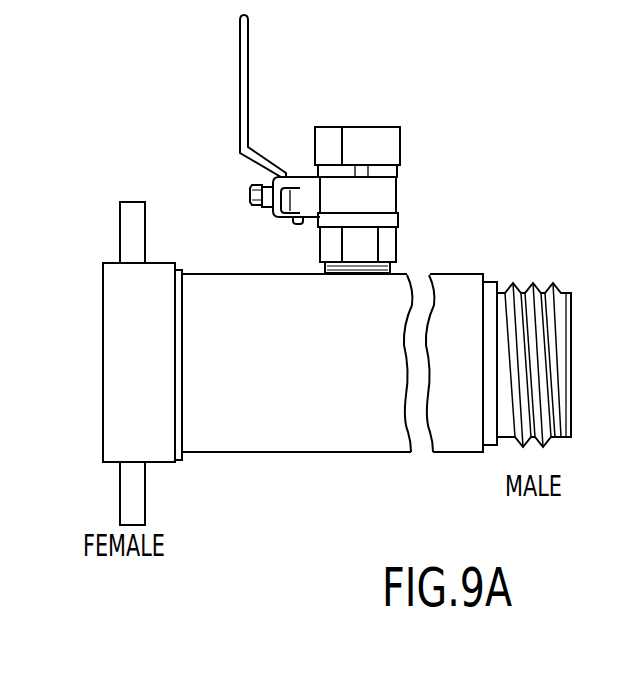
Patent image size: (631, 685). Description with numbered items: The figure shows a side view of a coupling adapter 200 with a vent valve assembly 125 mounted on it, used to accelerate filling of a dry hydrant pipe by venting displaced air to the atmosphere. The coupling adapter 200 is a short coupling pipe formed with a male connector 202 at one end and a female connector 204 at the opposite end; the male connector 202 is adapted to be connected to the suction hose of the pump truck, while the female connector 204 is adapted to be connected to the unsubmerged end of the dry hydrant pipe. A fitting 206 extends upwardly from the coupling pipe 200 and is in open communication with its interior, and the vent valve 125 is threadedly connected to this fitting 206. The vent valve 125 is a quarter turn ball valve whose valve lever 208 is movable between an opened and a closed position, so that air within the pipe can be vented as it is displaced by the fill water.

The coupling adapter 200 is at (287, 478).
The male connector 202 is at (532, 265).
The female connector 204 is at (97, 437).
The vent valve assembly 125 is at (410, 197).
The fitting 206 is at (325, 267).
The valve lever 208 is at (240, 66).